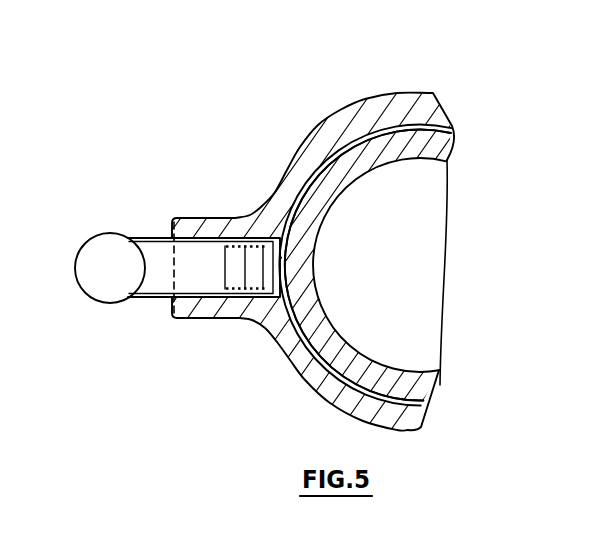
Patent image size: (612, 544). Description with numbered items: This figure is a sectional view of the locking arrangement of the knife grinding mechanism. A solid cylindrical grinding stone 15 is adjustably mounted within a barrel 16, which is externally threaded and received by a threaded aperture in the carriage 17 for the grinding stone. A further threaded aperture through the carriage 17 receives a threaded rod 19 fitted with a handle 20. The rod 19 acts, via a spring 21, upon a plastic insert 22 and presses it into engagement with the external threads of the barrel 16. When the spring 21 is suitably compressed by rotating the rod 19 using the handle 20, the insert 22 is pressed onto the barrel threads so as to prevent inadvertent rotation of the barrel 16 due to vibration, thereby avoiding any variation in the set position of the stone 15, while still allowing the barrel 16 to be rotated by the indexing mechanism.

The grinding stone 15 is at (438, 232).
The barrel 16 is at (456, 124).
The carriage 17 is at (295, 367).
The threaded rod 19 is at (158, 302).
The handle 20 is at (90, 300).
The spring 21 is at (227, 322).
The plastic insert 22 is at (270, 263).